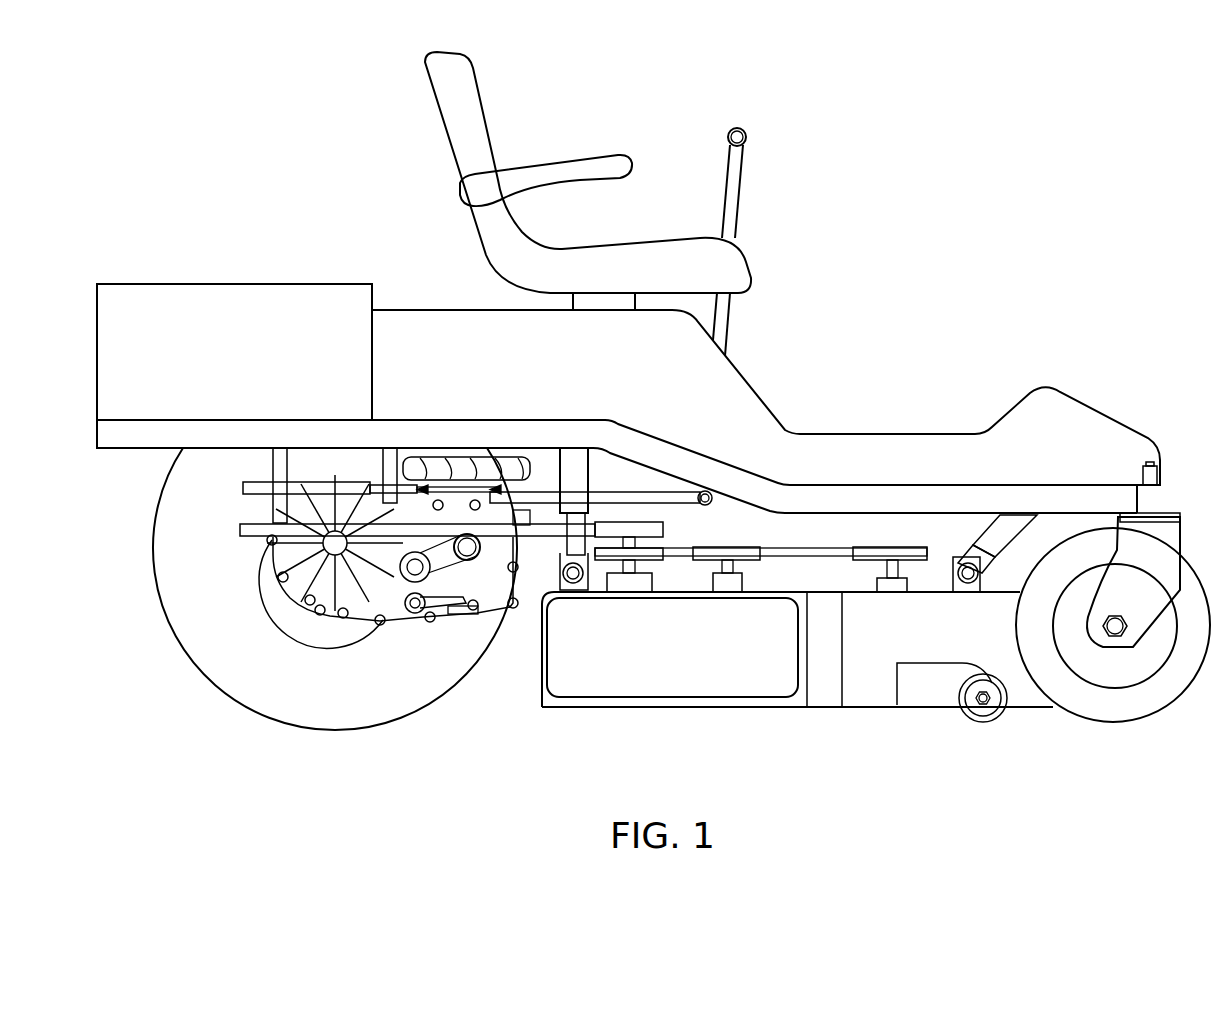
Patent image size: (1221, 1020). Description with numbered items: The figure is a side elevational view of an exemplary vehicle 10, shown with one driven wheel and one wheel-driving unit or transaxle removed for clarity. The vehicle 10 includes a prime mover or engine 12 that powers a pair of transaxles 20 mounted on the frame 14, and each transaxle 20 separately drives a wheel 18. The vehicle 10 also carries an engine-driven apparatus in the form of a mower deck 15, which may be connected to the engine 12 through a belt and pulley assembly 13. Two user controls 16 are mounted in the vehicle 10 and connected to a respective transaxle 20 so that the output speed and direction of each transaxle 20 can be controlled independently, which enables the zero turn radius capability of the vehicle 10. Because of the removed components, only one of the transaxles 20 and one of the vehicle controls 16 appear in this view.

The vehicle 10 is at (927, 272).
The engine 12 is at (248, 362).
The belt and pulley assembly 13 is at (683, 536).
The frame 14 is at (838, 477).
The mower deck 15 is at (942, 637).
The user control 16 is at (741, 200).
The wheel 18 is at (349, 687).
The transaxle 20 is at (262, 606).